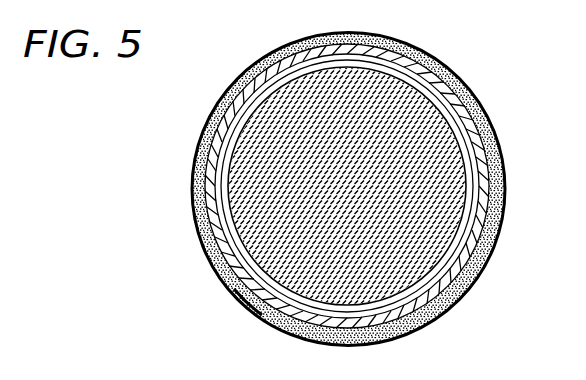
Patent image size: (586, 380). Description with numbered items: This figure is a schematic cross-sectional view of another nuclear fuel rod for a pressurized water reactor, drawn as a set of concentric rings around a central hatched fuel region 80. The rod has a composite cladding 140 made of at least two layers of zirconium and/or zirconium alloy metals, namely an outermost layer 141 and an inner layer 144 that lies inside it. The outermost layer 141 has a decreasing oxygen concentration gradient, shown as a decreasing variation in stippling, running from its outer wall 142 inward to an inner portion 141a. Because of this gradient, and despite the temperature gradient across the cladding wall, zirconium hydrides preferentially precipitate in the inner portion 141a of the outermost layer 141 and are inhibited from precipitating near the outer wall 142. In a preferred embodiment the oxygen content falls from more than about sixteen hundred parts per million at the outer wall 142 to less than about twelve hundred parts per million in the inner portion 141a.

The core / inner body 80 is at (427, 118).
The composite cladding 140 is at (210, 202).
The outermost layer 141 is at (197, 185).
The inner portion 141a is at (234, 289).
The outer wall 142 is at (201, 230).
The inner layer 144 is at (223, 141).